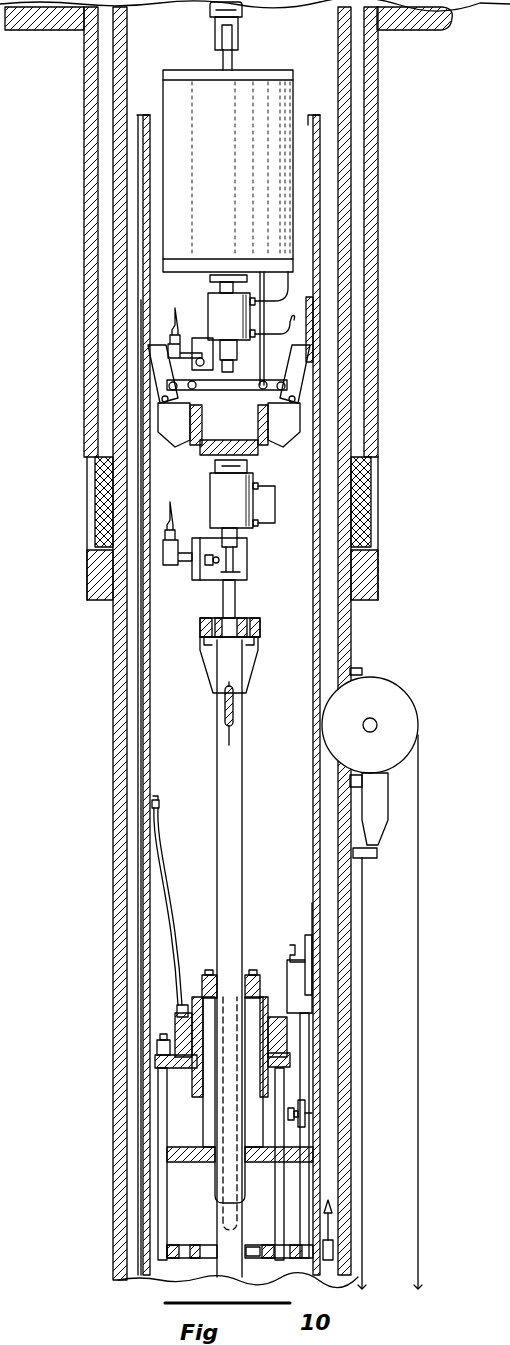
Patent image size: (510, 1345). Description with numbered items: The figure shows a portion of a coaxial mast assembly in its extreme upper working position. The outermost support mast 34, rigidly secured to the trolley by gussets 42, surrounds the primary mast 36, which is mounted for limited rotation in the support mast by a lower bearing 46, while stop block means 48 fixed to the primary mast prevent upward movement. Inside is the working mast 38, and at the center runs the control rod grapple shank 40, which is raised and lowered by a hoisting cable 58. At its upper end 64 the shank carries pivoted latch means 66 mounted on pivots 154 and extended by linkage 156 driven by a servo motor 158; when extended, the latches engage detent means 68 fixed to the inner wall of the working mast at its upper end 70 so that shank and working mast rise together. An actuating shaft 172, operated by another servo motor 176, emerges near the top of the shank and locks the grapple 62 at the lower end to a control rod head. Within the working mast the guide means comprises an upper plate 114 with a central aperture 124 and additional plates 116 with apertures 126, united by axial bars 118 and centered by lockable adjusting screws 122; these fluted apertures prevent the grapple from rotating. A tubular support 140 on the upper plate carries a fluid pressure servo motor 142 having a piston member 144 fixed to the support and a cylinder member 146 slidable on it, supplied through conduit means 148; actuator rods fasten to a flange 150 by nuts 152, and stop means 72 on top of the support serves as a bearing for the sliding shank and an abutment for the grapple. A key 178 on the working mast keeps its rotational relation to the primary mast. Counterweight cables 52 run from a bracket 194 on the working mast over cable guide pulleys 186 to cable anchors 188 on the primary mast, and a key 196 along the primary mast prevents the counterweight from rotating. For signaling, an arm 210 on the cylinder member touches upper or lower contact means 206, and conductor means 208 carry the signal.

The support mast 34 is at (83, 183).
The primary mast 36 is at (112, 699).
The working mast 38 is at (323, 622).
The control rod grapple shank 40 is at (243, 820).
The gussets 42 is at (452, 18).
The lower bearing 46 is at (97, 500).
The stop block means 48 is at (88, 573).
The cable 52 is at (419, 850).
The hoisting cable 58 is at (240, 5).
The grapple 62 is at (210, 1107).
The upper end of grapple shank 64 is at (217, 718).
The latch means 66 is at (157, 363).
The detent means 68 is at (310, 312).
The upper end of working mast 70 is at (316, 252).
The stop means 72 is at (204, 992).
The upper plate 114 is at (178, 1165).
The additional plates 116 is at (185, 1245).
The bars 118 is at (306, 1103).
The lockable adjusting screws 122 is at (294, 1105).
The central aperture 124 is at (281, 1140).
The apertures 126 is at (246, 1258).
The tubular support 140 is at (200, 1128).
The fluid pressure servo motor 142 is at (169, 1004).
The piston member 144 is at (178, 1030).
The cylinder member 146 is at (170, 1044).
The conduit means 148 is at (162, 857).
The flange 150 is at (205, 1085).
The nuts 152 is at (180, 1063).
The pivots 154 is at (162, 400).
The linkage 156 is at (213, 389).
The servo motor 158 is at (212, 305).
The actuating shaft 172 is at (250, 550).
The servo motor 176 is at (210, 485).
The key 178 is at (142, 742).
The cable guide pulleys 186 is at (396, 690).
The cable anchors 188 is at (386, 815).
The bracket 194 is at (333, 1262).
The key 196 is at (363, 1188).
The contact means 206 is at (290, 945).
The conductor means 208 is at (312, 906).
The arm 210 is at (294, 1005).